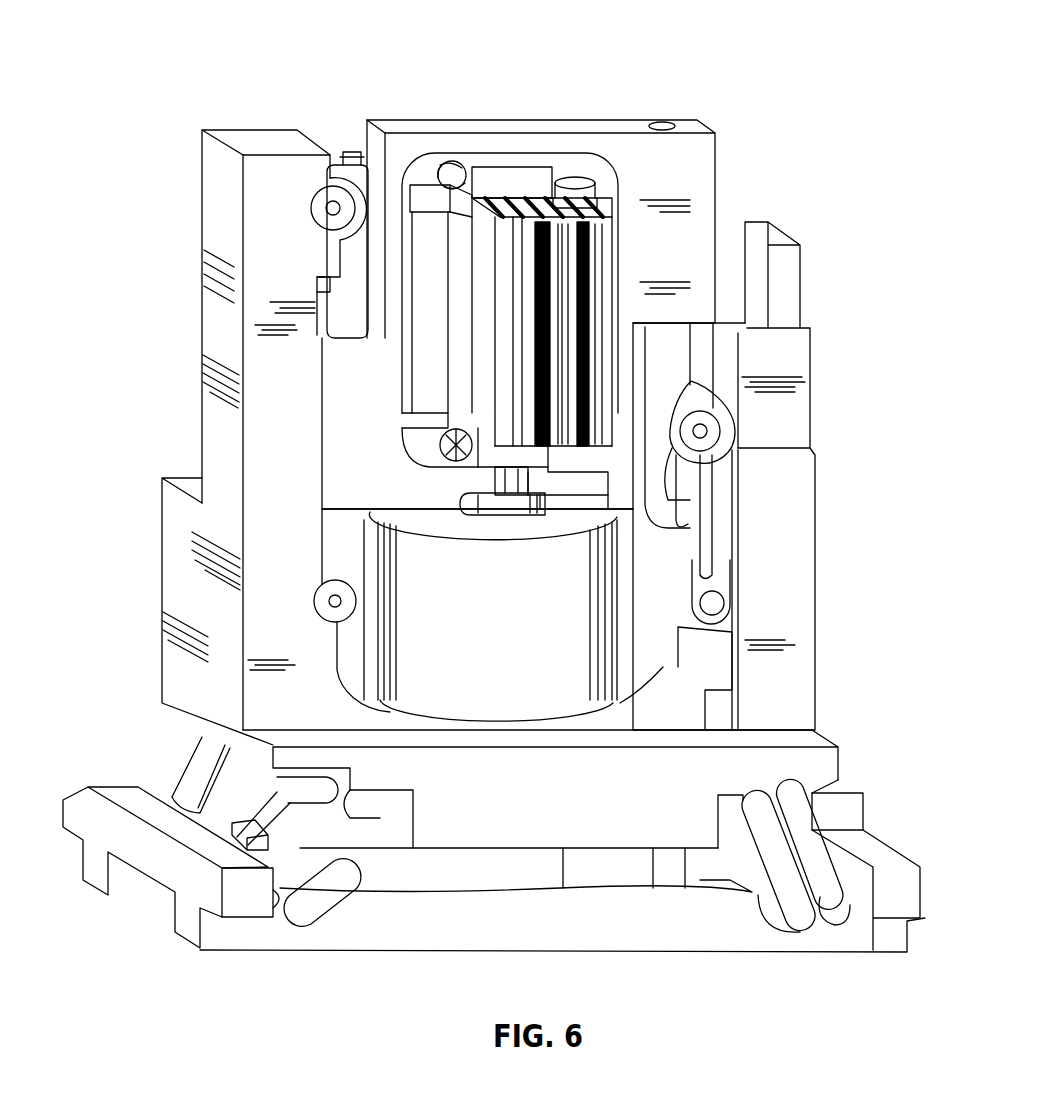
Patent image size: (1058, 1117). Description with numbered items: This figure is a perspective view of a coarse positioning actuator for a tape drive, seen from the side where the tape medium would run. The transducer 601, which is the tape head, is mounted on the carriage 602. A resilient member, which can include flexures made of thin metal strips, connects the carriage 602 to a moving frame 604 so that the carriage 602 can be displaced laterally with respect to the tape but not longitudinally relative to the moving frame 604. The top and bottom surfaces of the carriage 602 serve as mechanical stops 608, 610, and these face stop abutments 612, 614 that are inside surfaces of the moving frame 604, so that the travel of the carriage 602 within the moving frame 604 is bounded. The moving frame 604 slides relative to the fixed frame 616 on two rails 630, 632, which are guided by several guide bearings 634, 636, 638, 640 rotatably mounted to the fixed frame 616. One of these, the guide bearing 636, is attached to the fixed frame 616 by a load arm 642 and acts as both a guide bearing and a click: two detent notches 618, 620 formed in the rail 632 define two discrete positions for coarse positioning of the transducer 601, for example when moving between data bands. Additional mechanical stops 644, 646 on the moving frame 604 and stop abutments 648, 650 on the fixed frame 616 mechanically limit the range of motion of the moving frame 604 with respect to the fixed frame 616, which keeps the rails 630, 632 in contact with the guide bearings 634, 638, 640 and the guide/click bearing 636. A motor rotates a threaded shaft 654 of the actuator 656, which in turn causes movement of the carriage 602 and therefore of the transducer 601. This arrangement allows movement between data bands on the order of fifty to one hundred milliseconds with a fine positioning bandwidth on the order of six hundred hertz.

The transducer 601 is at (530, 340).
The carriage 602 is at (415, 383).
The moving frame 604 is at (370, 456).
The mechanical stop 608 is at (512, 165).
The mechanical stop 610 is at (503, 470).
The stop abutment 612 is at (600, 163).
The stop abutment 614 is at (600, 457).
The fixed frame 616 is at (215, 163).
The detent notch 618 is at (680, 473).
The detent notch 620 is at (681, 499).
The rail 630 is at (350, 155).
The rail 632 is at (713, 351).
The guide bearing 634 is at (308, 218).
The guide bearing 636 is at (725, 433).
The guide bearing 638 is at (314, 603).
The guide bearing 640 is at (678, 350).
The load arm 642 is at (717, 548).
The mechanical stop 644 is at (316, 323).
The mechanical stop 646 is at (350, 577).
The stop abutment 648 is at (316, 297).
The stop abutment 650 is at (314, 522).
The threaded shaft 654 is at (480, 492).
The actuator 656 is at (625, 622).